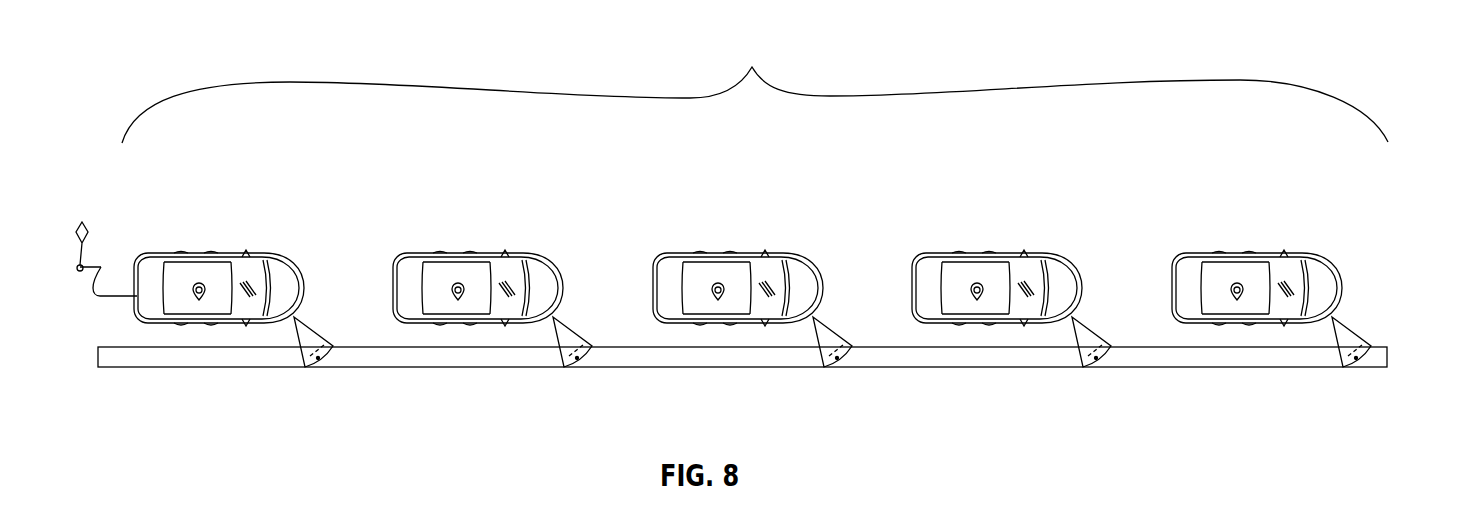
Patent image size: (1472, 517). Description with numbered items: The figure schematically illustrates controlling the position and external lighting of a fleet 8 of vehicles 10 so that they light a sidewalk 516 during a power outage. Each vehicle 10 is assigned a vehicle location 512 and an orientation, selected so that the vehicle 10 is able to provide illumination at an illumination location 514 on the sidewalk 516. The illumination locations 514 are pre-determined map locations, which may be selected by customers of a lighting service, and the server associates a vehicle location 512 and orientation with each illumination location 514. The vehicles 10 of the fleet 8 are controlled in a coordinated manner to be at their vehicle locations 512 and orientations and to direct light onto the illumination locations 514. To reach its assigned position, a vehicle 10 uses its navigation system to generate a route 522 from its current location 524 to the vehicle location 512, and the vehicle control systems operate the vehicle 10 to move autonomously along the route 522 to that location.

The fleet 8 is at (755, 85).
The vehicle 10 is at (167, 253).
The vehicle location 512 is at (201, 284).
The illumination location 514 is at (319, 360).
The sidewalk 516 is at (197, 370).
The route 522 is at (101, 267).
The current location 524 is at (84, 222).